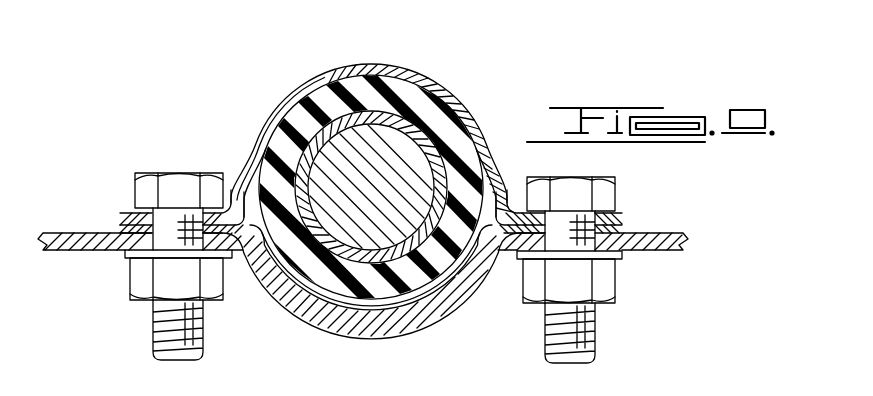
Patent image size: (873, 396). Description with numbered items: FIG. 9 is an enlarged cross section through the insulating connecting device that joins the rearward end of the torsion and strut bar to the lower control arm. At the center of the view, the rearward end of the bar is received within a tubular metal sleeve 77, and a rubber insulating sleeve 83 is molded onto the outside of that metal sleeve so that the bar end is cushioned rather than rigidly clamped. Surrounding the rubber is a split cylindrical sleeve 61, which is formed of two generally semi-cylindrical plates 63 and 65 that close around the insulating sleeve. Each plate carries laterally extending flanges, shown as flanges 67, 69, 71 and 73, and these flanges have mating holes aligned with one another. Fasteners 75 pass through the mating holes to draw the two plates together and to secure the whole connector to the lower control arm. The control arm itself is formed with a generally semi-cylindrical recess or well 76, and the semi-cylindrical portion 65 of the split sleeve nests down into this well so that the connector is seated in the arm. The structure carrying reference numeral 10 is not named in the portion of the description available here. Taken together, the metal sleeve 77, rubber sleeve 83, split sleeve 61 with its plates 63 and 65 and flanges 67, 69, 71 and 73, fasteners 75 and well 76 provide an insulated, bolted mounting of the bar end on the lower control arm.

The mounting plate 10 is at (58, 170).
The split cylindrical sleeve 61 is at (371, 122).
The semi-cylindrical plate 63 is at (385, 67).
The semi-cylindrical plate 65 is at (369, 301).
The laterally extending flange 67 is at (234, 208).
The laterally extending flange 69 is at (528, 206).
The laterally extending flange 71 is at (243, 228).
The laterally extending flange 73 is at (443, 170).
The fasteners 75 is at (158, 330).
The semi-cylindrical recess or well 76 is at (384, 316).
The tubular metal sleeve 77 is at (426, 175).
The rubber insulating sleeve 83 is at (420, 107).